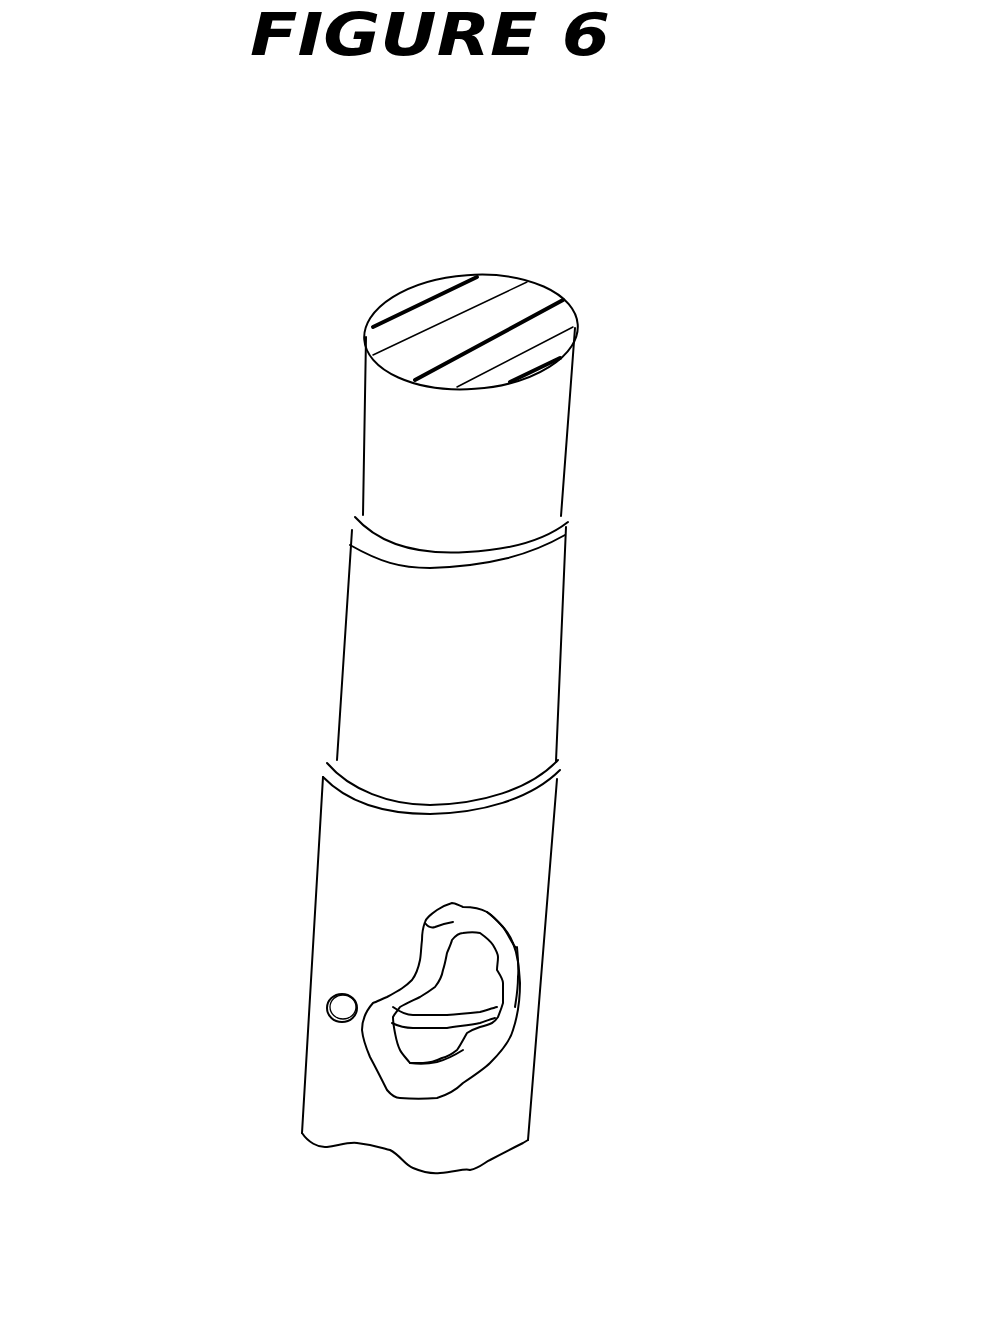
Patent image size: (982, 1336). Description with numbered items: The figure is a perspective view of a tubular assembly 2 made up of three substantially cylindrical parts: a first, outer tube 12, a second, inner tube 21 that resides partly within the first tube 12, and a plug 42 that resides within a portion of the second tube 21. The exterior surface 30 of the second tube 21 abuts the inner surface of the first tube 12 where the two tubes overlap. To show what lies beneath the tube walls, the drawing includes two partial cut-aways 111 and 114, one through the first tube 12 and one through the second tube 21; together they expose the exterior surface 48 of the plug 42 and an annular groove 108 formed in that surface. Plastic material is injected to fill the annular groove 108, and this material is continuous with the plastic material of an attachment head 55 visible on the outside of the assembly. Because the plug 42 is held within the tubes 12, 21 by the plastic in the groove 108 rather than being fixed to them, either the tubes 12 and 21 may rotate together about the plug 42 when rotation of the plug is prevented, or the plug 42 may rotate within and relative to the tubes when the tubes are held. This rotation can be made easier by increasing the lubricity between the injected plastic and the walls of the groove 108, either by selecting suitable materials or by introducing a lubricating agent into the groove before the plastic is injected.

The tubular assembly 2 is at (132, 1160).
The first tube 12 is at (539, 825).
The second tube 21 is at (545, 625).
The exterior surface 30 is at (425, 923).
The plug 42 is at (556, 413).
The exterior surface 48 is at (470, 977).
The attachment head 55 is at (337, 1007).
The annular groove 108 is at (485, 1008).
The partial cut-away 111 is at (508, 930).
The partial cut-away 114 is at (430, 1063).